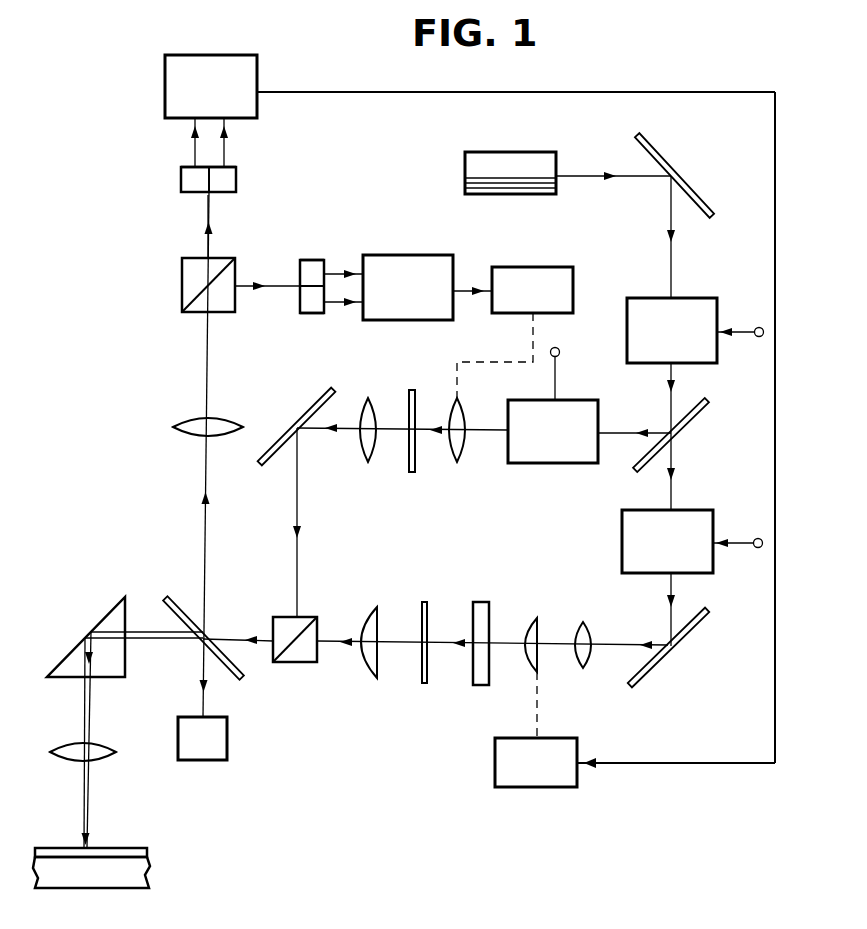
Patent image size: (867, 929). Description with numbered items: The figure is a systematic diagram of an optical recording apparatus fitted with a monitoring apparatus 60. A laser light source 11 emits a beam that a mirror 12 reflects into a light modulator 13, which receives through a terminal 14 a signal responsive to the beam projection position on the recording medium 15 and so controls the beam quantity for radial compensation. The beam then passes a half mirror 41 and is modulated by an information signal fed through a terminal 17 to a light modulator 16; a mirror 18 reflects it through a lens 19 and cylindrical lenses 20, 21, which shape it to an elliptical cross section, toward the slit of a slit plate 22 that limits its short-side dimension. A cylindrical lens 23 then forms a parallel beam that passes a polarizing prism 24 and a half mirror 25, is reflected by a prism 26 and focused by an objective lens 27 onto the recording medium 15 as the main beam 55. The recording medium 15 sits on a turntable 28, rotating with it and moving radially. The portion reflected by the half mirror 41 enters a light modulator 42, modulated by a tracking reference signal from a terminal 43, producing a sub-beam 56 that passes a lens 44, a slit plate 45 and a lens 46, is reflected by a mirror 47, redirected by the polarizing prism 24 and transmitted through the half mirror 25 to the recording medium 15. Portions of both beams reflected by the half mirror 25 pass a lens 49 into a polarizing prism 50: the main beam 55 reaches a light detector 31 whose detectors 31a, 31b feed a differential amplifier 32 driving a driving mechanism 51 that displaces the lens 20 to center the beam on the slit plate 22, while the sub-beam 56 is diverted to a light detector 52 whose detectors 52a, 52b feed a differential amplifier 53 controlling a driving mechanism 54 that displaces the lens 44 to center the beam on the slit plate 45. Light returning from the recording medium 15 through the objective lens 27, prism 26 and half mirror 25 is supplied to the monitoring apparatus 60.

The laser light source 11 is at (465, 166).
The mirror 12 is at (663, 157).
The light modulator 13 is at (645, 298).
The terminal 14 is at (757, 326).
The recording medium 15 is at (132, 848).
The light modulator 16 is at (622, 526).
The terminal 17 is at (756, 538).
The mirror 18 is at (676, 645).
The lens 19 is at (585, 620).
The cylindrical lens 20 is at (537, 618).
The cylindrical lens 21 is at (479, 602).
The slit plate 22 is at (421, 607).
The cylindrical lens 23 is at (365, 612).
The polarizing prism 24 is at (286, 664).
The half mirror 25 is at (175, 605).
The prism 26 is at (105, 606).
The objective lens 27 is at (100, 750).
The turntable 28 is at (150, 870).
The light detector 31 is at (178, 181).
The light detector 31a is at (188, 165).
The light detector 31b is at (232, 168).
The differential amplifier 32 is at (203, 55).
The half mirror 41 is at (694, 416).
The light modulator 42 is at (615, 398).
The terminal 43 is at (560, 352).
The lens 44 is at (462, 408).
The slit plate 45 is at (410, 392).
The lens 46 is at (370, 400).
The mirror 47 is at (300, 406).
The lens 49 is at (186, 426).
The polarizing prism 50 is at (182, 284).
The driving mechanism 51 is at (525, 788).
The light detector 52 is at (295, 271).
The light detector 52a is at (312, 314).
The light detector 52b is at (312, 260).
The differential amplifier 53 is at (403, 255).
The driving mechanism 54 is at (534, 267).
The main beam 55 is at (205, 228).
The sub-beam 56 is at (284, 289).
The monitoring apparatus 60 is at (231, 743).